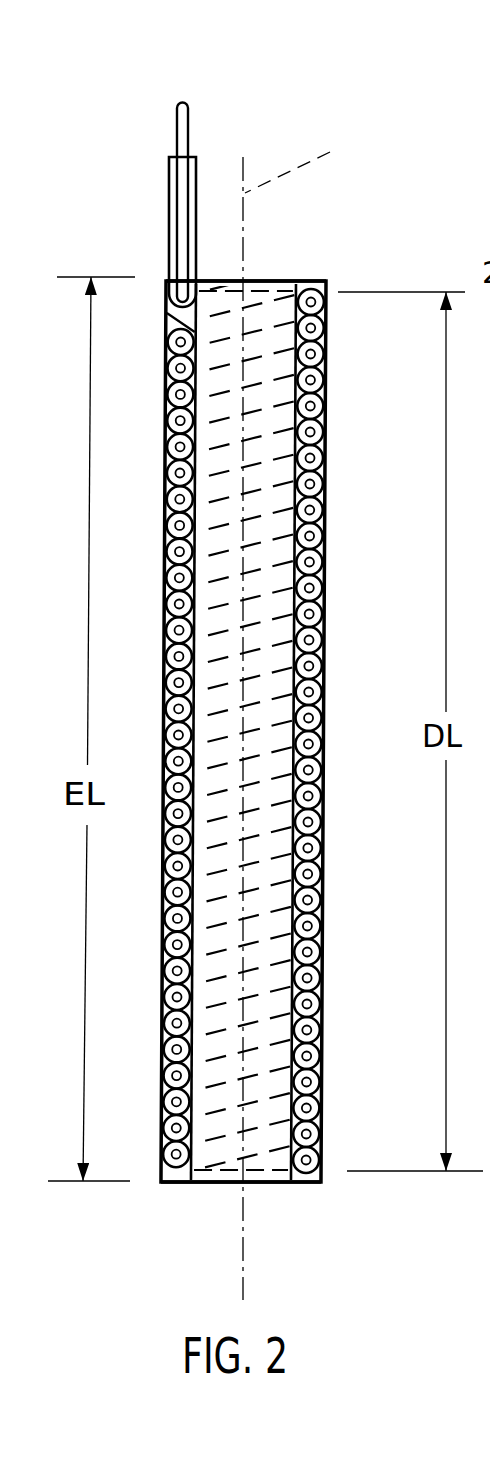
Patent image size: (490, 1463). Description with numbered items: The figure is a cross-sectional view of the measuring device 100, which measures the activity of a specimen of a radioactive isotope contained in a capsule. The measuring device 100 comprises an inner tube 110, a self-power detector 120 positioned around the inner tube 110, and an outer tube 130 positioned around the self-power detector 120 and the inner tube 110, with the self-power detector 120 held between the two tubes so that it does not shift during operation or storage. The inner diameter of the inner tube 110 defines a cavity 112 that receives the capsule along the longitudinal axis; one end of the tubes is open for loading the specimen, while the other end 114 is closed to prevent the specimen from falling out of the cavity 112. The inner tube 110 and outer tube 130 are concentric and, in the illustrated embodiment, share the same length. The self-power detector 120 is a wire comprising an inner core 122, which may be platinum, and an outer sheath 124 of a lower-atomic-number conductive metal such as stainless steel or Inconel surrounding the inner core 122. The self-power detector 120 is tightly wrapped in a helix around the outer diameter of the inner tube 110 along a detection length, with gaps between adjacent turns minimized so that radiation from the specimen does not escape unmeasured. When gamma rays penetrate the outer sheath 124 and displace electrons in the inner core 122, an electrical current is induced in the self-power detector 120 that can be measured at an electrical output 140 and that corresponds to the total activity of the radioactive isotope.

The measuring device 100 is at (318, 102).
The inner tube 110 is at (193, 1052).
The cavity 112 is at (263, 280).
The other end 114 is at (247, 1182).
The self-power detector 120 is at (253, 542).
The outer tube 130 is at (326, 815).
The electrical output 140 is at (215, 113).
The inner core 122 is at (175, 205).
The outer sheath 124 is at (172, 172).